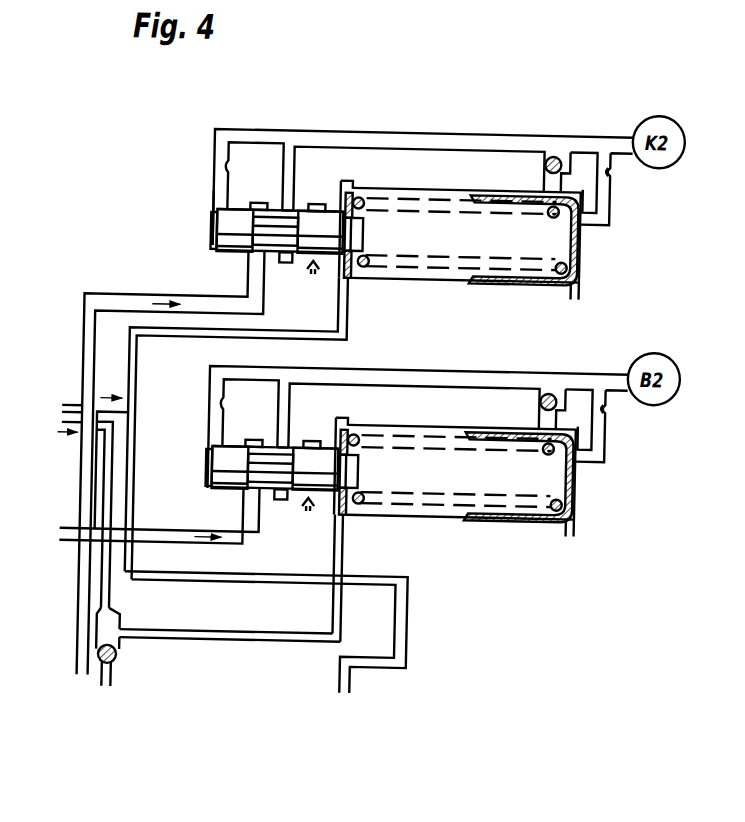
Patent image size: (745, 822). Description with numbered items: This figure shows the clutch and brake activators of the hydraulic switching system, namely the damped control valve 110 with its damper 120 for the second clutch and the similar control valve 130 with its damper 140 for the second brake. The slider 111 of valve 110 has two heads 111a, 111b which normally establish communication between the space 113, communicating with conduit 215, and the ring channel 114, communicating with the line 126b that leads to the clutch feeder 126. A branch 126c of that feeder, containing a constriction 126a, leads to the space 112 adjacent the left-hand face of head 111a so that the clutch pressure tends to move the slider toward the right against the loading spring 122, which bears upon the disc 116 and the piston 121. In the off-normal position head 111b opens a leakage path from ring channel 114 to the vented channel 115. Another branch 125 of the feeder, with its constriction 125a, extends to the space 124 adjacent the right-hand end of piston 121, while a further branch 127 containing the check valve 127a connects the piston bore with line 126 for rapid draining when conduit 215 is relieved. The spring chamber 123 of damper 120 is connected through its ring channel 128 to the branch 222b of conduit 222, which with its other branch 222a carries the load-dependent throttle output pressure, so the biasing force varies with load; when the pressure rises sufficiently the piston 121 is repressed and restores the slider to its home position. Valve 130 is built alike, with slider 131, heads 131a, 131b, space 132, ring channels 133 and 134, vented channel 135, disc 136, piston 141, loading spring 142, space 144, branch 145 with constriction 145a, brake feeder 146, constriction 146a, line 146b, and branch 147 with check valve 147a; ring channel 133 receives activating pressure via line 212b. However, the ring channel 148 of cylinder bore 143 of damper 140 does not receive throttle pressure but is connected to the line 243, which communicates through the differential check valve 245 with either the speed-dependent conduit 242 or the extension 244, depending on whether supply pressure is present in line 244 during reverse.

The control valve 110 is at (144, 212).
The slider 111 is at (279, 236).
The slider head 111a is at (234, 230).
The slider head 111b is at (320, 232).
The space 112 is at (213, 251).
The space 113 is at (267, 203).
The ring channel 114 is at (290, 260).
The vented channel 115 is at (318, 203).
The disc 116 is at (352, 280).
The damper 120 is at (609, 247).
The piston 121 is at (521, 275).
The loading spring 122 is at (447, 265).
The spring chamber 123 is at (434, 238).
The space 124 is at (580, 280).
The branch 125 is at (601, 202).
The throttle 125a is at (612, 166).
The feeder 126 is at (441, 128).
The constriction 126a is at (225, 165).
The line 126b is at (290, 169).
The branch 126c is at (214, 188).
The branch 127 is at (554, 184).
The check valve 127a is at (547, 159).
The ring channel 128 is at (349, 188).
The control valve 130 is at (239, 466).
The slider 131 is at (269, 504).
The slider head 131a is at (230, 467).
The slider head 131b is at (315, 469).
The space 132 is at (192, 488).
The ring channel 133 is at (233, 484).
The ring channel 134 is at (284, 510).
The vented channel 135 is at (317, 497).
The disc 136 is at (363, 454).
The damper 140 is at (509, 482).
The piston 141 is at (518, 496).
The loading spring 142 is at (455, 497).
The cylinder bore 143 is at (454, 497).
The space 144 is at (604, 530).
The branch 145 is at (608, 430).
The throttle 145a is at (631, 425).
The feeder 146 is at (419, 415).
The constriction 146a is at (249, 413).
The line 146b is at (408, 417).
The branch 147 is at (566, 409).
The check valve 147a is at (515, 404).
The ring channel 148 is at (347, 579).
The line 212b is at (190, 539).
The conduit 215 is at (92, 468).
The conduit 222 is at (74, 408).
The pressure line branch 222a is at (137, 366).
The branch 222b is at (262, 583).
The conduit 242 is at (124, 670).
The line 243 is at (305, 642).
The extension 244 is at (116, 573).
The differential check valve 245 is at (129, 658).